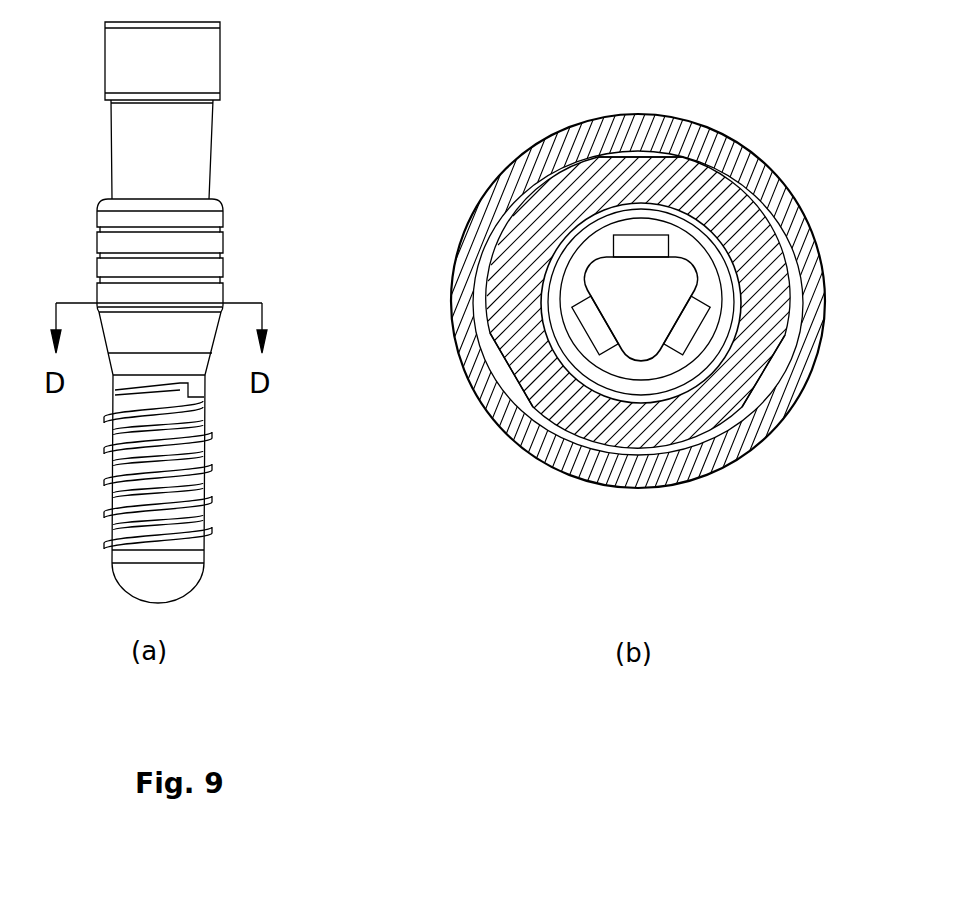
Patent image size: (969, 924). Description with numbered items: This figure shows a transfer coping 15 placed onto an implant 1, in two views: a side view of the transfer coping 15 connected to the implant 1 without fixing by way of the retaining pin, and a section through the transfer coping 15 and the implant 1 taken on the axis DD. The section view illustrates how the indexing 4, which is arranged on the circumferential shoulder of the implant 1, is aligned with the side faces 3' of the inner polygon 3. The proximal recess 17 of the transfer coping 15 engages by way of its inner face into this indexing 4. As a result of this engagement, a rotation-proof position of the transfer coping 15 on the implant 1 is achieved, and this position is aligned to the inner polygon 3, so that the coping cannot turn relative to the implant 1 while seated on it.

The implant 1 is at (232, 503).
The transfer coping 15 is at (237, 82).
The proximal recess 17 is at (583, 230).
The indexing 4 is at (628, 137).
The inner polygon 3 is at (709, 193).
The side faces 3' is at (621, 273).